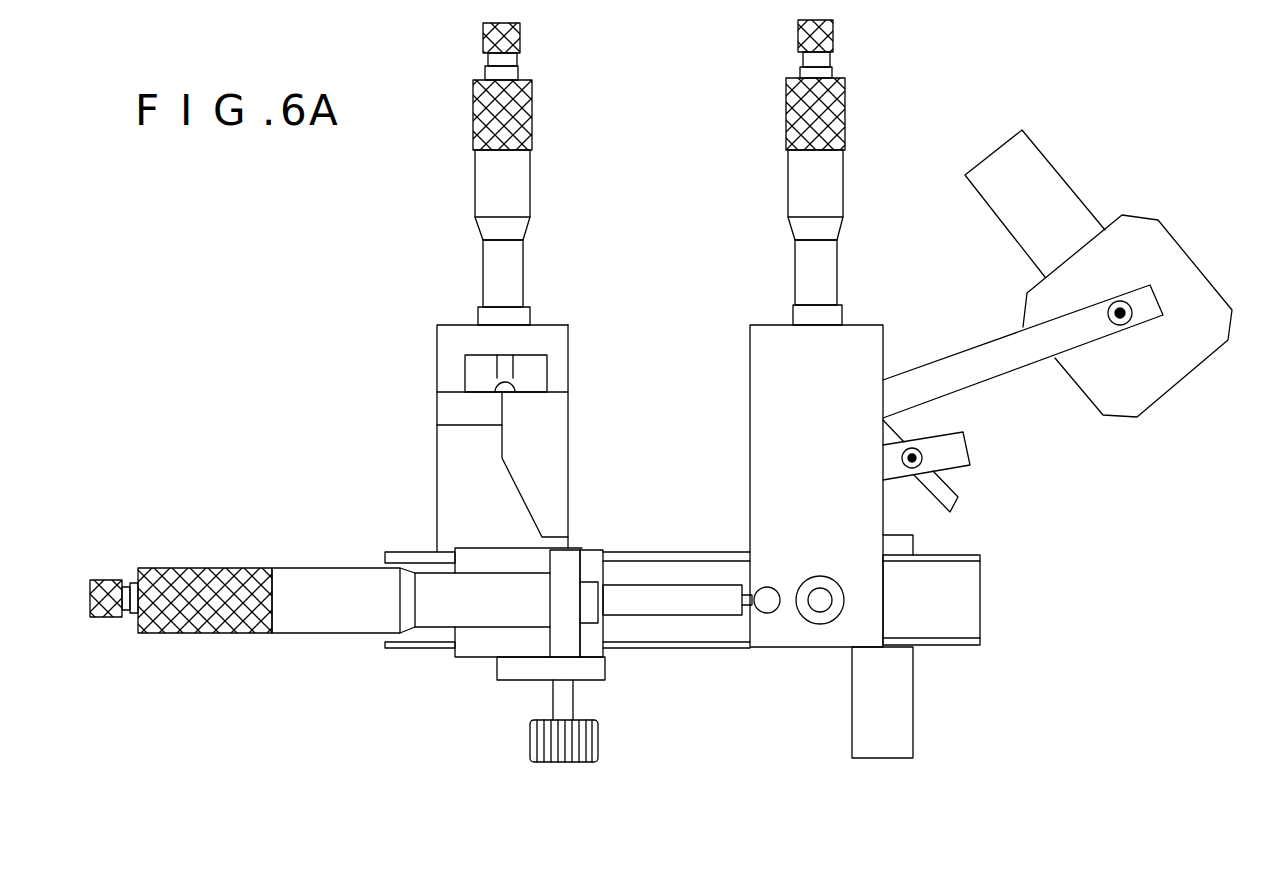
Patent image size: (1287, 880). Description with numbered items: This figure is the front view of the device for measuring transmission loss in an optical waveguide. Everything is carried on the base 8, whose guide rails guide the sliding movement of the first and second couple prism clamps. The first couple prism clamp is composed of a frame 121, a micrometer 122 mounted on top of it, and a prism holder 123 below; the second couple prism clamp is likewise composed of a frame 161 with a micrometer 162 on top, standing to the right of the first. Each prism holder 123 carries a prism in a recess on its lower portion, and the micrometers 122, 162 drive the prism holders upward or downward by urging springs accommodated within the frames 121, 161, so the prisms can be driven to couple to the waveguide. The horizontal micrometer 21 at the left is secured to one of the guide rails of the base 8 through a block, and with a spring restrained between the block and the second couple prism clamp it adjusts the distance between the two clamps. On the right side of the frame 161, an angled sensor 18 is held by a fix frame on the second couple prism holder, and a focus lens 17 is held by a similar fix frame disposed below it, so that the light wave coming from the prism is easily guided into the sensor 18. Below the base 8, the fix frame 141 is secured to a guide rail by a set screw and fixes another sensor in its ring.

The base 8 is at (980, 598).
The focus lens 17 is at (955, 485).
The sensor 18 is at (1207, 280).
The micrometer 21 is at (333, 618).
The frame 121 is at (552, 325).
The micrometer 122 is at (532, 117).
The prism holder 123 is at (560, 478).
The fix frame 141 is at (905, 695).
The frame 161 is at (765, 325).
The micrometer 162 is at (845, 118).